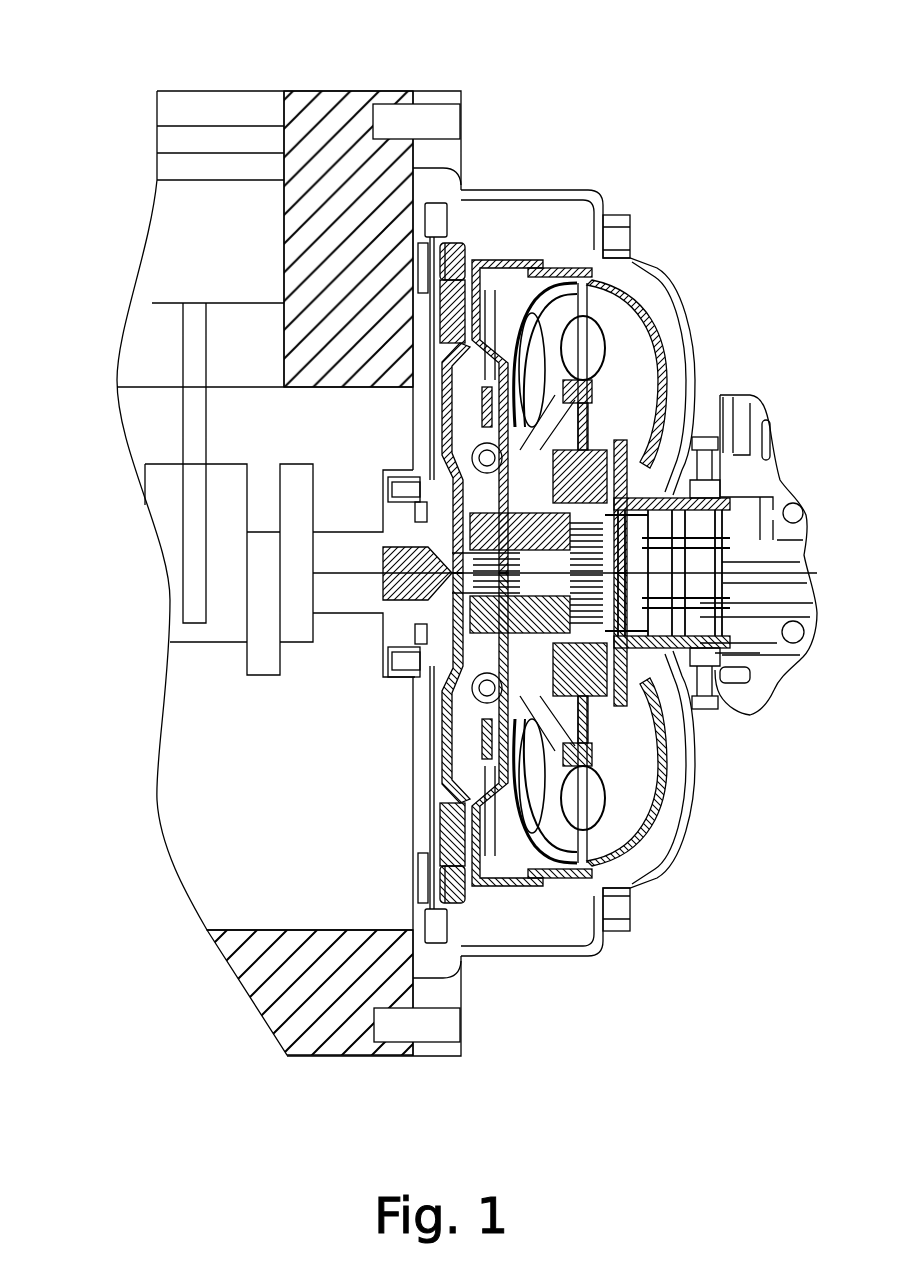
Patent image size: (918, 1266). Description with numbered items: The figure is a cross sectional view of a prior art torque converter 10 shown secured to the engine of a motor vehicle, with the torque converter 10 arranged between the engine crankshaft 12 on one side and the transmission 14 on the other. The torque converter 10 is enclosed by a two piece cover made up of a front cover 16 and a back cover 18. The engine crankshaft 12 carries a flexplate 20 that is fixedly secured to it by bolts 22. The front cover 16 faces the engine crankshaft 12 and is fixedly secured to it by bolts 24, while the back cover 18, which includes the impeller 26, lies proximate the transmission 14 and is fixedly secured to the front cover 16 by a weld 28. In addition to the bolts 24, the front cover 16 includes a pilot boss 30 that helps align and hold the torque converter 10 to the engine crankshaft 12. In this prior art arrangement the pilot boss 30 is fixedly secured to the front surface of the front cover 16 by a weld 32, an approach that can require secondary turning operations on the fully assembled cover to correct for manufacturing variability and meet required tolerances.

The torque converter 10 is at (642, 282).
The engine crankshaft 12 is at (374, 626).
The transmission 14 is at (776, 413).
The front cover 16 is at (543, 890).
The back cover 18 is at (620, 883).
The flexplate 20 is at (422, 398).
The bolts 22 is at (406, 490).
The bolts 24 is at (453, 267).
The impeller 26 is at (625, 365).
The weld 28 is at (550, 260).
The pilot boss 30 is at (383, 587).
The weld 32 is at (432, 675).